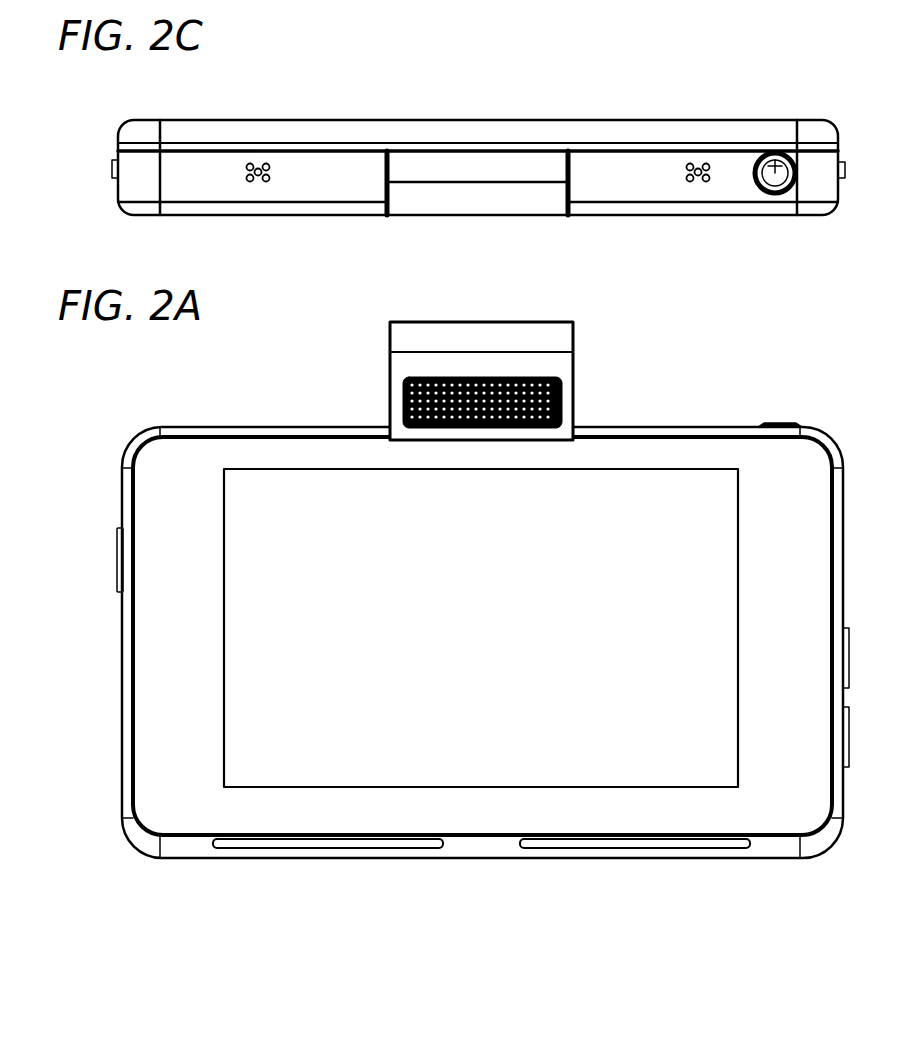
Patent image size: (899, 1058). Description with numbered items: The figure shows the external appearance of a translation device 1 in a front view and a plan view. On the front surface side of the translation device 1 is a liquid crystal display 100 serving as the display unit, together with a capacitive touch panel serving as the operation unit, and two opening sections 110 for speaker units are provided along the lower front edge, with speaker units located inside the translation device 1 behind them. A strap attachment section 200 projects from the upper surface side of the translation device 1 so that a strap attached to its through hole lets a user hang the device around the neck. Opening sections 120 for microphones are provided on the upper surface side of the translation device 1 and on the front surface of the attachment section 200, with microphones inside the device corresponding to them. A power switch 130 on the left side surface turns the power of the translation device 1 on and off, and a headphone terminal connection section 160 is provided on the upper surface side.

In FIG. 2C, the translation device 1 is at (832, 98).
In FIG. 2A, the translation device 1 is at (795, 402).
In FIG. 2A, the liquid crystal display 100 is at (490, 765).
In FIG. 2A, the opening sections for speaker units 110 is at (330, 843).
In FIG. 2C, the opening sections for microphones 120 is at (258, 162).
In FIG. 2A, the opening sections for microphones 120 is at (563, 388).
In FIG. 2A, the power switch 130 is at (117, 566).
In FIG. 2C, the headphone terminal connection section 160 is at (778, 160).
In FIG. 2C, the strap attachment section 200 is at (477, 216).
In FIG. 2A, the strap attachment section 200 is at (472, 340).